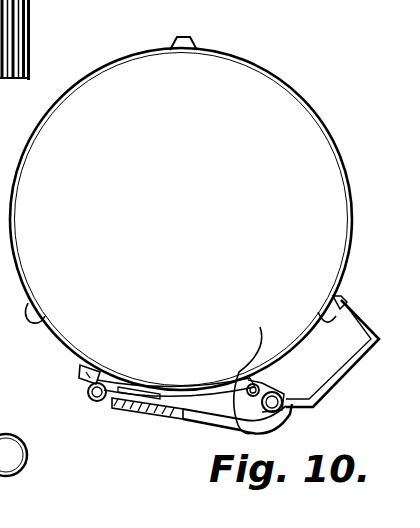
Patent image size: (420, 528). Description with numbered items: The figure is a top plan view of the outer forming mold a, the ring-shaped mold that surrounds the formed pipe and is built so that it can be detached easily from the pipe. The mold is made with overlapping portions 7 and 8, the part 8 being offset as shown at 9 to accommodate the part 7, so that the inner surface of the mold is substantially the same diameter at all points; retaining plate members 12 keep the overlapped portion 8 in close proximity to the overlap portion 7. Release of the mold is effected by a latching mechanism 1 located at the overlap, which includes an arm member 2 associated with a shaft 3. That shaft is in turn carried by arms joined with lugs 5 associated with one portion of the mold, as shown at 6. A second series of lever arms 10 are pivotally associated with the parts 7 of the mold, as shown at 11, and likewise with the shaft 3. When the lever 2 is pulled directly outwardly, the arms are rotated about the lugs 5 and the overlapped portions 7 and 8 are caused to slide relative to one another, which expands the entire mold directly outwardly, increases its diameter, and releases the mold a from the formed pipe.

The outer forming mold a is at (327, 37).
The latching mechanism 1 is at (279, 396).
The arm member 2 is at (331, 392).
The shaft 3 is at (281, 405).
The lugs 5 is at (249, 385).
The mold portion carrying lugs 6 is at (249, 368).
The overlapping portion 7 is at (173, 381).
The overlapping portion 8 is at (157, 402).
The offset 9 is at (262, 418).
The lever arms 10 is at (205, 415).
The pivotal connection 11 is at (85, 375).
The retaining plate members 12 is at (106, 403).